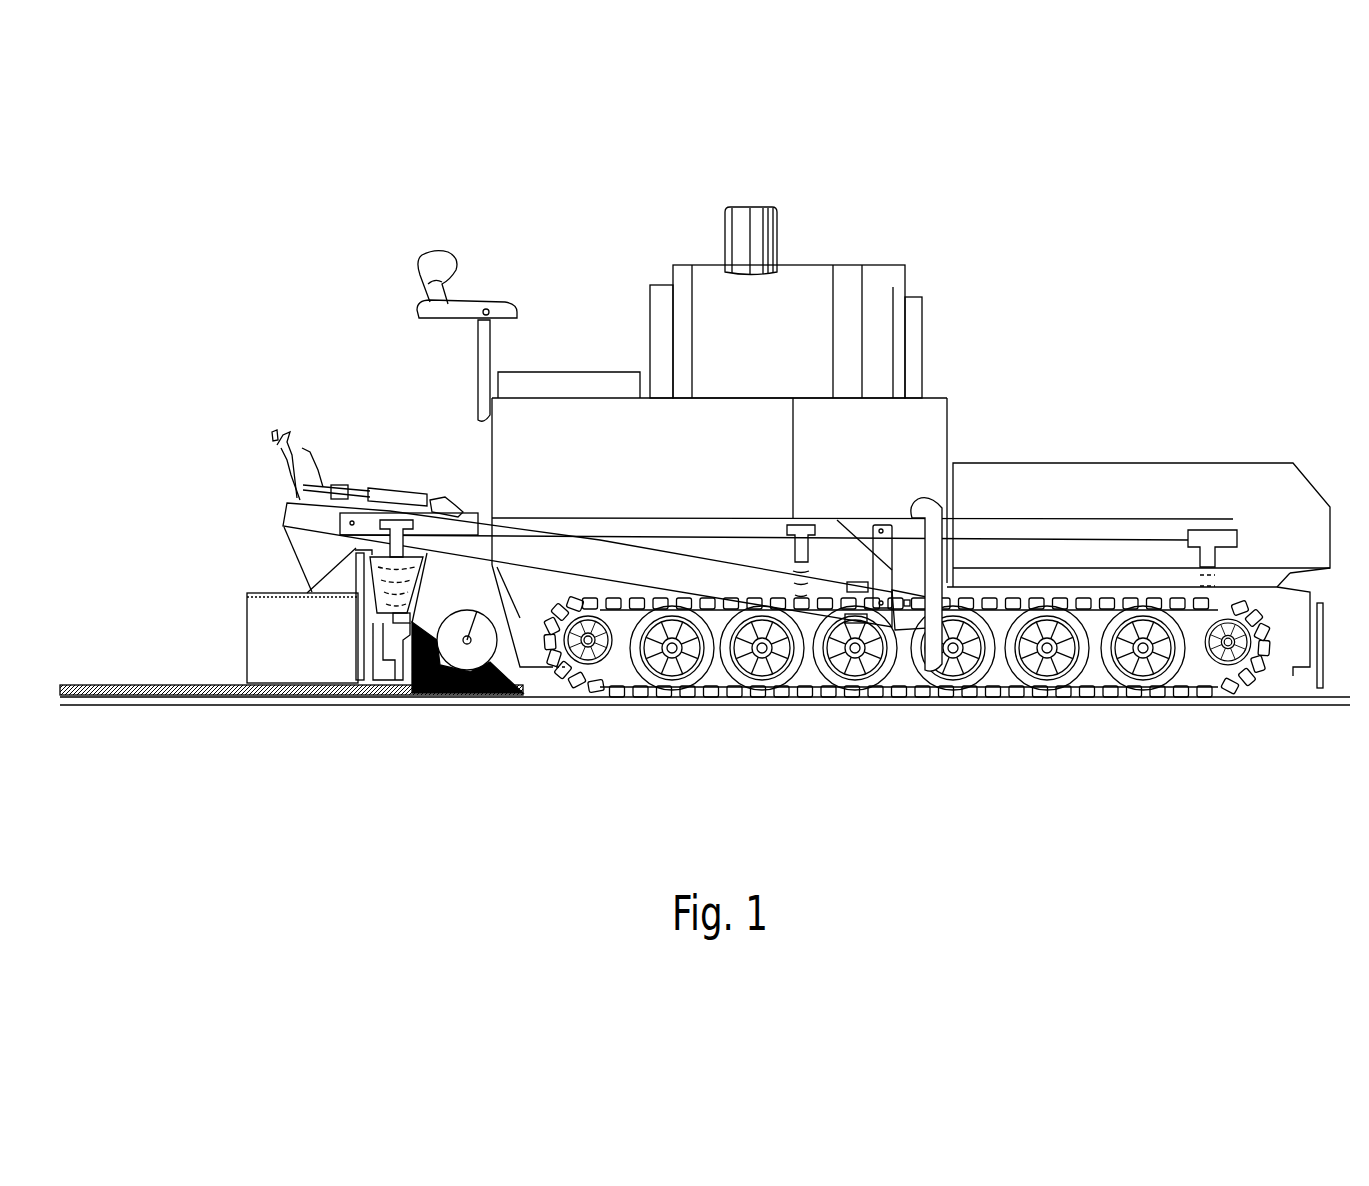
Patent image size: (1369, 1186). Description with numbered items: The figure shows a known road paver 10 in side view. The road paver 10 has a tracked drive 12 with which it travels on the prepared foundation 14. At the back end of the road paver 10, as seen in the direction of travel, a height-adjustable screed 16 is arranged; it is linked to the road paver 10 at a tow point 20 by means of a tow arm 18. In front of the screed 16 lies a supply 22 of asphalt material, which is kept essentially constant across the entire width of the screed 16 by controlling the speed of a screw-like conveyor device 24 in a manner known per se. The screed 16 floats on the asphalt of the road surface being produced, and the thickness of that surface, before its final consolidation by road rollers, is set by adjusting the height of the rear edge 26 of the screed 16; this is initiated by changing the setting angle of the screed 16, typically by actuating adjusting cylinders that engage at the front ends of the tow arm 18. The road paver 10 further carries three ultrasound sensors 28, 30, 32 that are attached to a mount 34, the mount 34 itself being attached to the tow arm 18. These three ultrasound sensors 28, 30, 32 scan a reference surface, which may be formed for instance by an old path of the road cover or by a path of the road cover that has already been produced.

The road paver 10 is at (988, 376).
The tracked drive 12 is at (1260, 670).
The prepared foundation 14 is at (1323, 705).
The screed 16 is at (307, 663).
The tow arm 18 is at (478, 548).
The tow point 20 is at (948, 622).
The supply of asphalt material 22 is at (475, 683).
The screw-like conveyor device 24 is at (485, 643).
The rear edge of the screed 26 is at (165, 696).
The ultrasound sensor 28 is at (397, 527).
The ultrasound sensor 30 is at (803, 523).
The ultrasound sensor 32 is at (1203, 535).
The mount 34 is at (1132, 535).